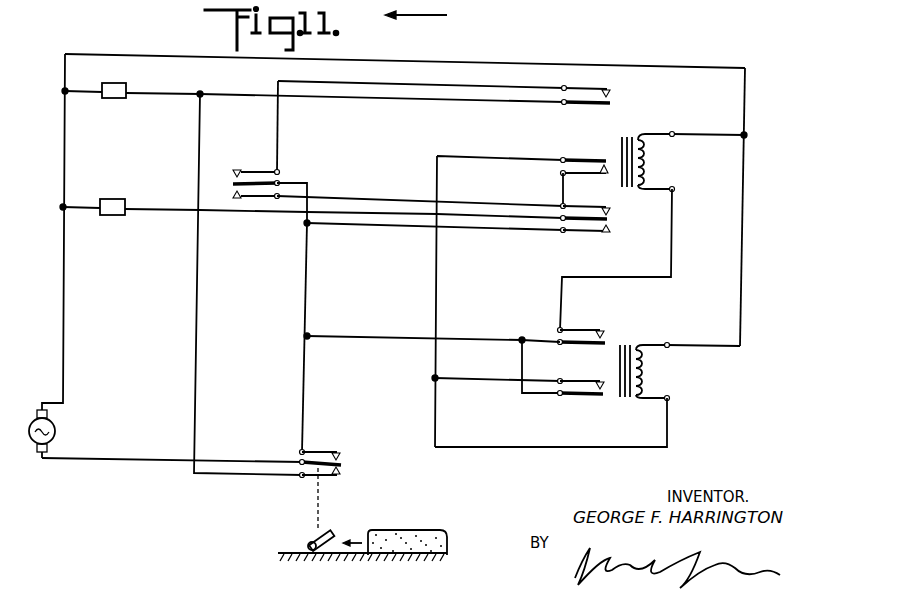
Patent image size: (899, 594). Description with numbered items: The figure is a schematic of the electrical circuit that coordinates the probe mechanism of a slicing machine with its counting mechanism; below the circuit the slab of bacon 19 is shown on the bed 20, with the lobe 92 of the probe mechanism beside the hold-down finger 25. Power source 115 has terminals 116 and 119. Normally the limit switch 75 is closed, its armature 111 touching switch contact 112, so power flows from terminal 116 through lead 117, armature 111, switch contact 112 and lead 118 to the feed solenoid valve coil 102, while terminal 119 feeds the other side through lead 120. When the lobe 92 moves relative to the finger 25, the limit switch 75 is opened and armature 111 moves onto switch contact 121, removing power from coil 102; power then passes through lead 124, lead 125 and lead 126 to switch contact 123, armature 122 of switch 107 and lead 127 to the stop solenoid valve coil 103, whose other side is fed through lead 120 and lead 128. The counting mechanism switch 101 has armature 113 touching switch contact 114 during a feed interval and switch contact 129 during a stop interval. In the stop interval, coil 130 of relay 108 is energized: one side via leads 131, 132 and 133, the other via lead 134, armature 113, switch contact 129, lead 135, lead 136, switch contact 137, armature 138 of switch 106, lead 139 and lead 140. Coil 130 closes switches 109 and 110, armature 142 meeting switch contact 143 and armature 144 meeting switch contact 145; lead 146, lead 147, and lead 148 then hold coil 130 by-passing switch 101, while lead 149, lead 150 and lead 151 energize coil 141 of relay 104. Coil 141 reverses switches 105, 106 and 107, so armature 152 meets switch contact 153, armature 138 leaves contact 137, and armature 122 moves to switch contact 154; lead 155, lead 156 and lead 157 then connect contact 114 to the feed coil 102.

The slab of bacon 19 is at (404, 530).
The bed 20 is at (287, 553).
The hold-down finger 25 is at (332, 556).
The limit switch 75 is at (384, 462).
The lobe 92 is at (313, 540).
The switch 101 is at (225, 193).
The feed solenoid valve coil 102 is at (126, 85).
The stop solenoid valve coil 103 is at (125, 216).
The relay 104 is at (671, 162).
The switch 105 is at (652, 113).
The switch 106 is at (612, 153).
The switch 107 is at (642, 233).
The relay 108 is at (680, 372).
The switch 109 is at (637, 341).
The switch 110 is at (634, 428).
The armature 111 is at (344, 465).
The switch contact 112 is at (307, 478).
The armature 113 is at (279, 181).
The switch contact 114 is at (258, 170).
The power source 115 is at (56, 430).
The terminal 116 is at (40, 454).
The lead 117 is at (122, 459).
The lead 118 is at (198, 322).
The terminal 119 is at (37, 411).
The lead 120 is at (64, 315).
The switch contact 121 is at (318, 450).
The armature 122 is at (578, 225).
The switch contact 123 is at (598, 234).
The lead 124 is at (301, 390).
The lead 125 is at (308, 292).
The lead 126 is at (447, 232).
The lead 127 is at (372, 210).
The lead 128 is at (89, 212).
The switch contact 129 is at (257, 199).
The coil 130 is at (648, 377).
The lead 131 is at (64, 134).
The lead 132 is at (482, 53).
The lead 133 is at (746, 233).
The lead 134 is at (313, 192).
The lead 135 is at (500, 178).
The lead 136 is at (563, 176).
The switch contact 137 is at (580, 178).
The armature 138 is at (582, 157).
The lead 139 is at (437, 292).
The lead 140 is at (471, 447).
The coil 141 is at (649, 167).
The armature 142 is at (585, 397).
The switch contact 143 is at (585, 372).
The armature 144 is at (574, 344).
The switch contact 145 is at (597, 330).
The lead 146 is at (350, 336).
The lead 147 is at (521, 362).
The lead 148 is at (464, 380).
The lead 149 is at (700, 133).
The lead 150 is at (533, 329).
The lead 151 is at (673, 233).
The armature 152 is at (597, 105).
The switch contact 153 is at (588, 91).
The switch contact 154 is at (608, 213).
The lead 155 is at (378, 83).
The lead 156 is at (357, 104).
The lead 157 is at (174, 98).